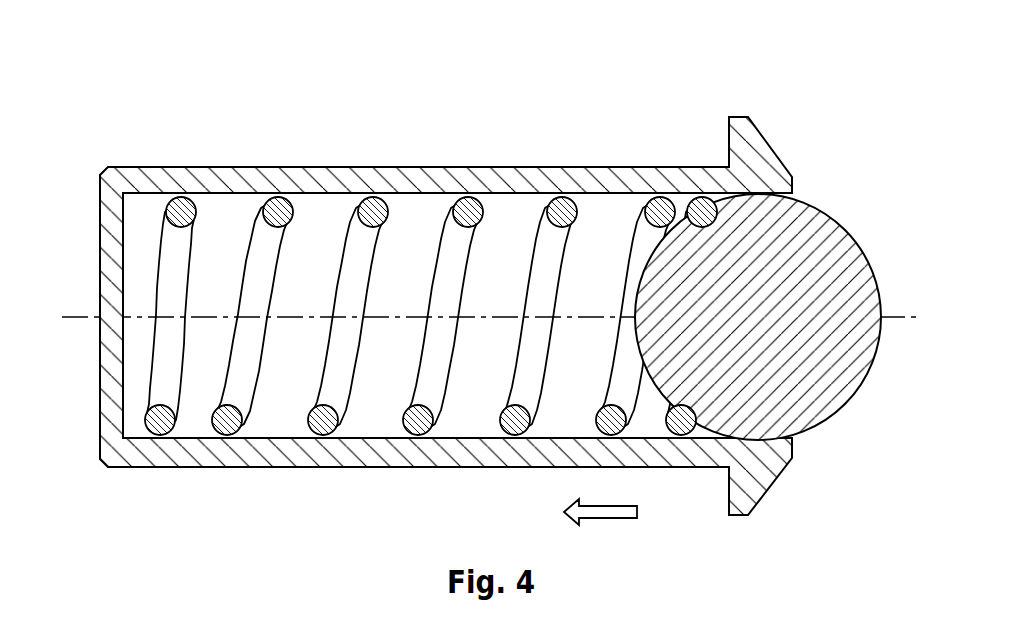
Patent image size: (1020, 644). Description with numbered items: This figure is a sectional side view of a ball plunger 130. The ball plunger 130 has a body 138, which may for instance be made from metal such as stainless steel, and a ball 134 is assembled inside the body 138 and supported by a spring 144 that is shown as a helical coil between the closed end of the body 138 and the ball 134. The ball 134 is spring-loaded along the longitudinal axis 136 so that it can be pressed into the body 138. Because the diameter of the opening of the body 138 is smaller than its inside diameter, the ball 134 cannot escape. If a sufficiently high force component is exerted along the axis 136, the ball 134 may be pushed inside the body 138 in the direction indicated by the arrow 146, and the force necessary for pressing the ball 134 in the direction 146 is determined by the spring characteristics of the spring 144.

The ball plunger 130 is at (120, 78).
The ball 134 is at (806, 215).
The longitudinal axis 136 is at (78, 318).
The body 138 is at (564, 167).
The spring 144 is at (240, 371).
The arrow (direction of ball movement) 146 is at (610, 521).